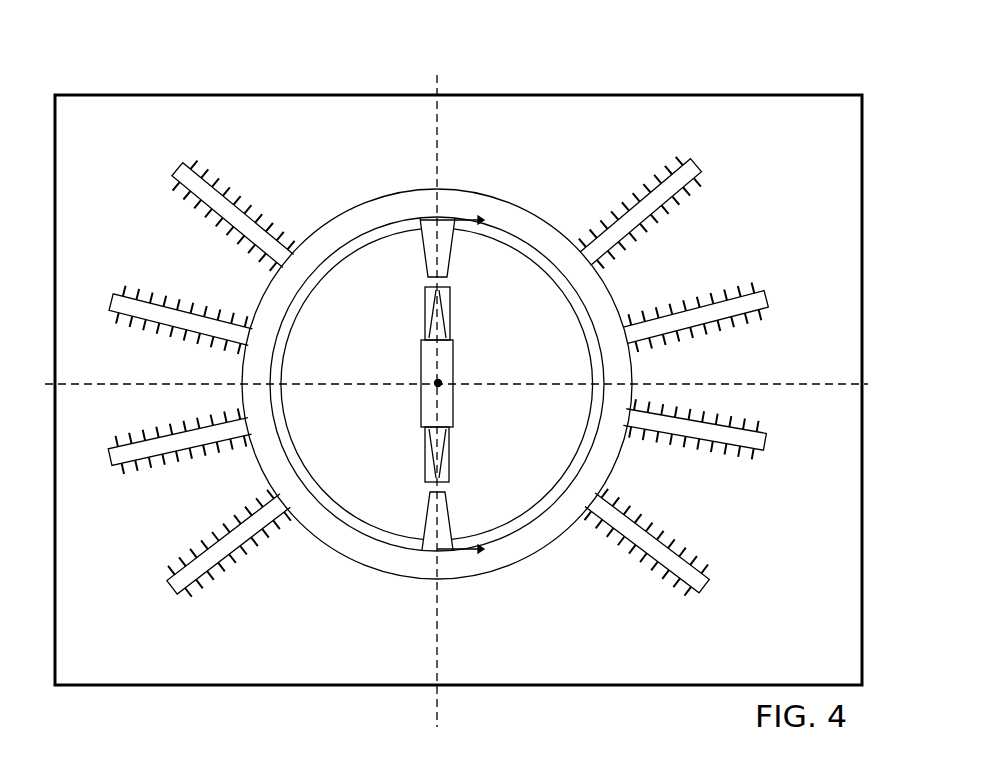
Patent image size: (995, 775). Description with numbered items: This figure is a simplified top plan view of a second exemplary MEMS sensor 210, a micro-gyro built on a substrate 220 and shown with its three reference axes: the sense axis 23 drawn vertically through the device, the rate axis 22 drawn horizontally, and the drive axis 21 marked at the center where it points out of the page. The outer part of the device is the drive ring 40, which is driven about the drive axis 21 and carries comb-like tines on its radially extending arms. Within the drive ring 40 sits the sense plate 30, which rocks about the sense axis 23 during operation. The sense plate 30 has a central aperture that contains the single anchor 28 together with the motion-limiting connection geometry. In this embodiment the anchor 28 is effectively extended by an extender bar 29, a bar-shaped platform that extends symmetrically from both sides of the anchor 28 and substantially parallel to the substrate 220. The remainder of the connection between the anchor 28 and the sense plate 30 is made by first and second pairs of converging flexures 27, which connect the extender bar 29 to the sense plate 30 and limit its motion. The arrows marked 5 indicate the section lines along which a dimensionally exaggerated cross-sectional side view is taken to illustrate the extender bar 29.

The MEMS sensor 210 is at (489, 371).
The substrate 220 is at (458, 390).
The sense axis 23 is at (440, 387).
The rate axis 22 is at (489, 385).
The drive axis 21 is at (387, 357).
The drive ring 40 is at (472, 194).
The sense plate 30 is at (413, 255).
The section lines 5- 5 is at (458, 386).
The flexures 27 is at (436, 318).
The anchor 28 is at (447, 380).
The extender bar 29 is at (455, 403).